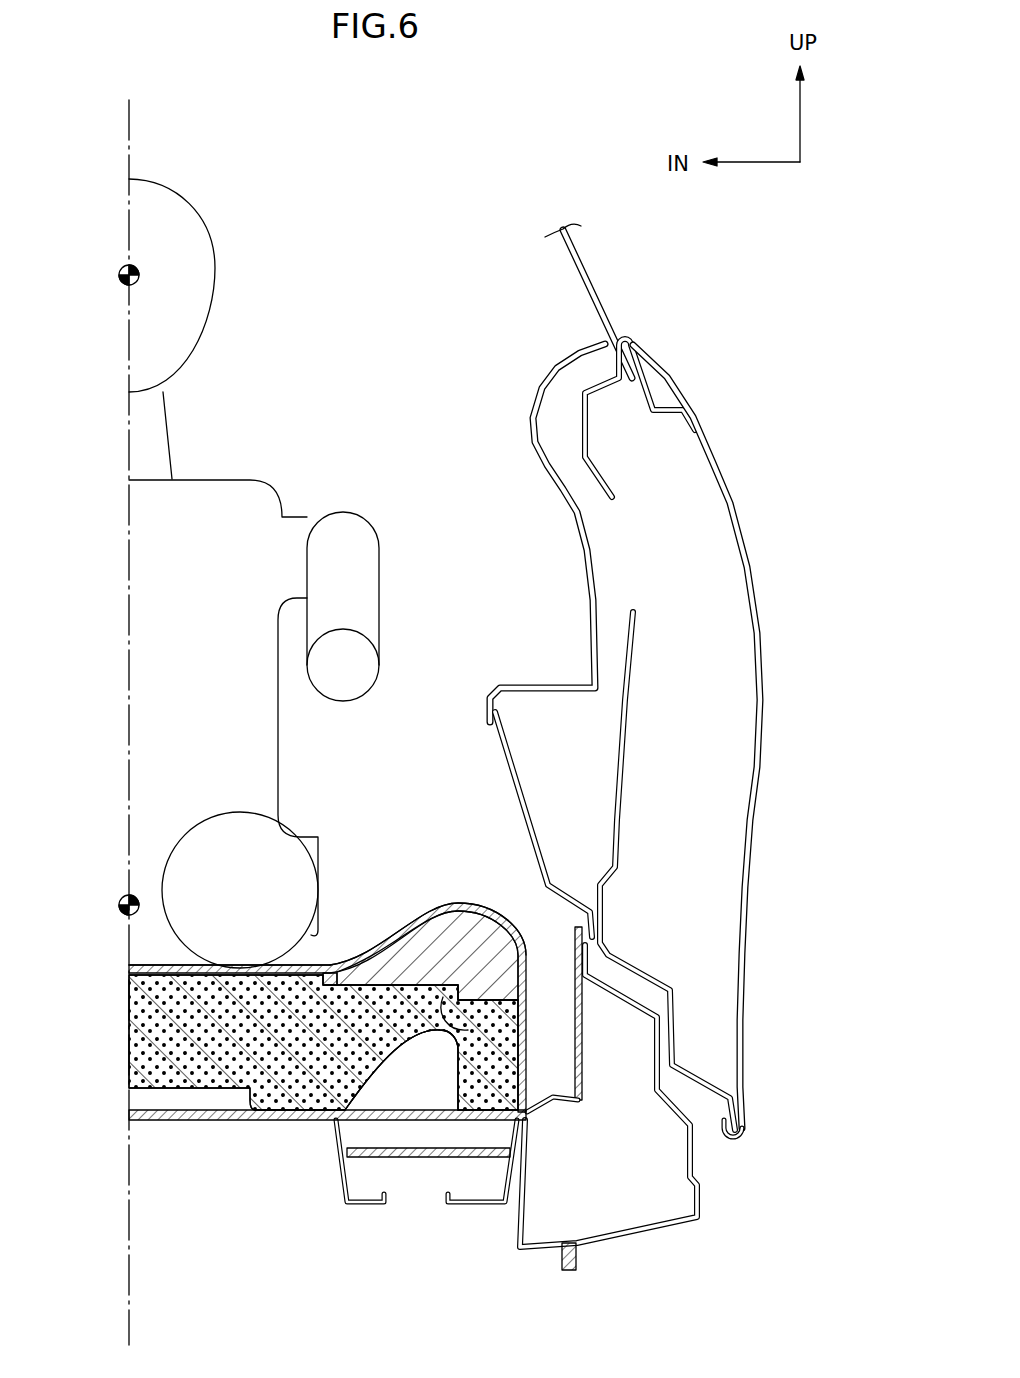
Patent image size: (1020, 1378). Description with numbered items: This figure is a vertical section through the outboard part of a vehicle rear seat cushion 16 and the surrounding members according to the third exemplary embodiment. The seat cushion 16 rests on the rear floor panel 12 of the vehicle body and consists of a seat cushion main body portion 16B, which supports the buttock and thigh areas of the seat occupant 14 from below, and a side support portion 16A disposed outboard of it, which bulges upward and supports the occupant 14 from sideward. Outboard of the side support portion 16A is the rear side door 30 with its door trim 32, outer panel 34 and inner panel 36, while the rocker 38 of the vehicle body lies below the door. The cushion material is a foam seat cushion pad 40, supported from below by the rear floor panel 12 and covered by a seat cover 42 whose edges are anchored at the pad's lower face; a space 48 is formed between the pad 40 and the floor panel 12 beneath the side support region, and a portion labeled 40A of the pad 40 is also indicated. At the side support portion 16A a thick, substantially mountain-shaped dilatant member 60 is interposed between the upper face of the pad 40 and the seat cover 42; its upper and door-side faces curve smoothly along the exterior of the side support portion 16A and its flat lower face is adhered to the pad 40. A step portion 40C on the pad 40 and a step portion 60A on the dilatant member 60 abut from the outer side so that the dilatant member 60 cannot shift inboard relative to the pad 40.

The rear floor panel 12 is at (190, 1120).
The seat occupant 14 is at (226, 479).
The seat cushion 16 is at (339, 1048).
The side support portion 16A is at (425, 905).
The seat cushion main body portion 16B is at (200, 965).
The rear side door 30 is at (665, 680).
The door trim 32 is at (583, 553).
The outer panel 34 is at (760, 712).
The inner panel 36 is at (625, 727).
The rocker 38 is at (697, 1200).
The seat cushion pad 40 is at (275, 1064).
The pad lower portion 40A is at (368, 1105).
The step portion 40C is at (480, 990).
The seat cover 42 is at (162, 965).
The space 48 is at (405, 1095).
The dilatant member 60 is at (484, 963).
The step portion 60A is at (447, 1003).